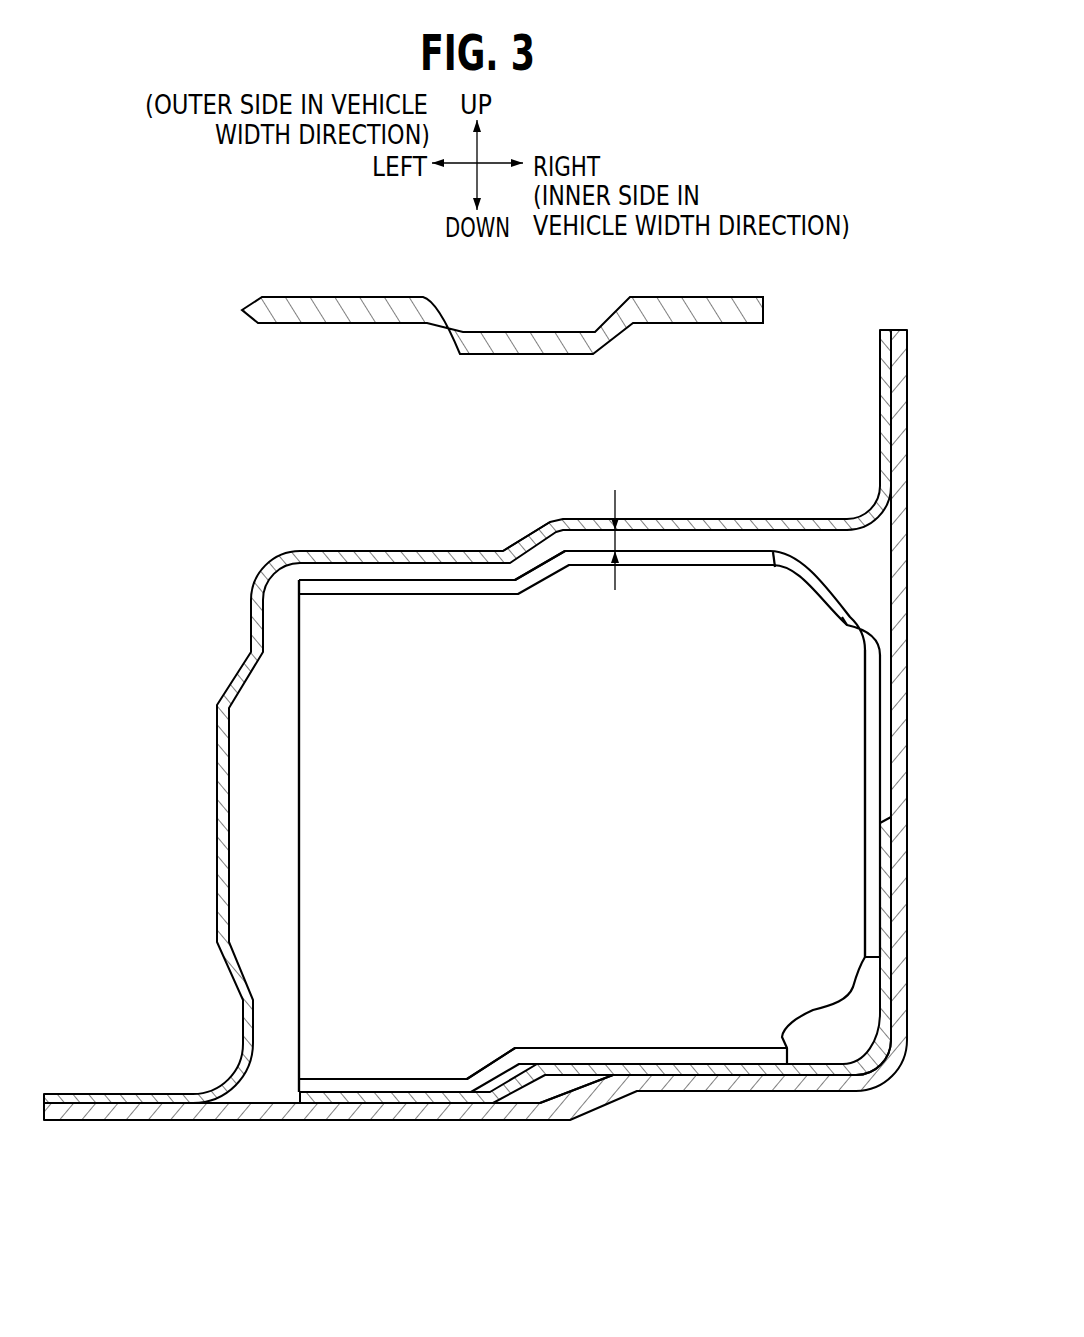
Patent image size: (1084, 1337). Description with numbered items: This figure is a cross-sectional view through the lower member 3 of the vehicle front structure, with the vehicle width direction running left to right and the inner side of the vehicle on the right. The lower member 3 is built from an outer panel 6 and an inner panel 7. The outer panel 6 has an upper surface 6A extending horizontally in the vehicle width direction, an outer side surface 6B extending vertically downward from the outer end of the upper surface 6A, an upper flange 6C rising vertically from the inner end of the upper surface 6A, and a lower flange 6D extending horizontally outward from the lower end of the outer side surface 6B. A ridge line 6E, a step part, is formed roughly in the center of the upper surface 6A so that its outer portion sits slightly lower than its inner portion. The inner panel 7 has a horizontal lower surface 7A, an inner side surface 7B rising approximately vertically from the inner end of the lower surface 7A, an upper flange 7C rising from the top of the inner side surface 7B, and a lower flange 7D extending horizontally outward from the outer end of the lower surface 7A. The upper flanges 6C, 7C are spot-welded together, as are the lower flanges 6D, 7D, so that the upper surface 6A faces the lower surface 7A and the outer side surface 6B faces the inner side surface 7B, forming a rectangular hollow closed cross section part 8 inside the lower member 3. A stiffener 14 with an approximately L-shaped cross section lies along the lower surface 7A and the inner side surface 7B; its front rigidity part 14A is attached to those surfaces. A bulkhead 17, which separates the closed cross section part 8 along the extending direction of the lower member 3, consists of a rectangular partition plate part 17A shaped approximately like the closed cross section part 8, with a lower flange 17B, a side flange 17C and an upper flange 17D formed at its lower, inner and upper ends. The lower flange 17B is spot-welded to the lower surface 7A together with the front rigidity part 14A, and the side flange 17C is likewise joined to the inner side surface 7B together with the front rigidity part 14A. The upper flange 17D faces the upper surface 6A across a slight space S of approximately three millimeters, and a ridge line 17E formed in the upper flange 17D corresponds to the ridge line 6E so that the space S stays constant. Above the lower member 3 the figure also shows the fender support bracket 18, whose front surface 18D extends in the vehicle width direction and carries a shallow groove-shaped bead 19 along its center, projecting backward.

The lower member 3 is at (229, 547).
The outer panel 6 is at (378, 533).
The upper surface 6A is at (690, 519).
The outer side surface 6B is at (218, 764).
The upper flange 6C is at (880, 380).
The lower flange 6D is at (113, 1094).
The ridge line 6E is at (532, 535).
The inner panel 7 is at (244, 1146).
The lower surface 7A is at (460, 1121).
The inner side surface 7B is at (908, 683).
The upper flange 7C is at (908, 435).
The lower flange 7D is at (115, 1121).
The closed cross section part 8 is at (566, 823).
The stiffener 14 is at (537, 1090).
The front rigidity part 14A is at (357, 1103).
The bulkhead 17 is at (292, 697).
The partition plate part 17A is at (347, 837).
The lower flange 17B is at (677, 1053).
The side flange 17C is at (868, 852).
The upper flange 17D is at (430, 586).
The ridge line 17E is at (520, 541).
The fender support bracket 18 is at (332, 270).
The front surface 18D is at (387, 296).
The bead 19 is at (527, 331).
The space S is at (603, 534).